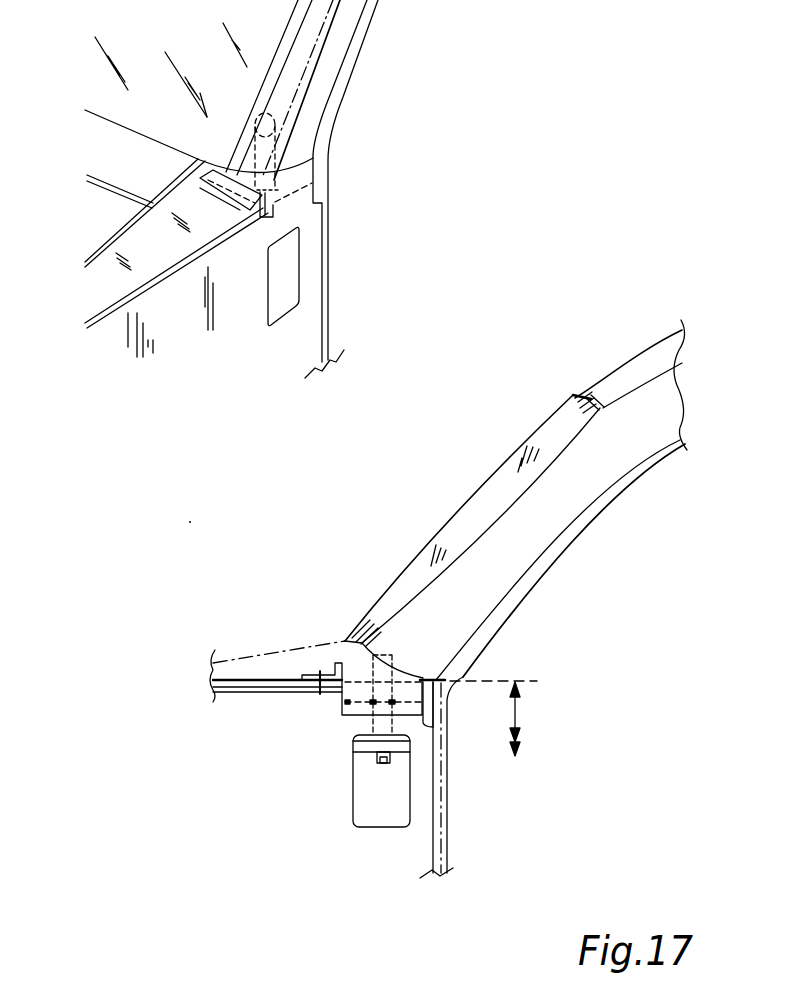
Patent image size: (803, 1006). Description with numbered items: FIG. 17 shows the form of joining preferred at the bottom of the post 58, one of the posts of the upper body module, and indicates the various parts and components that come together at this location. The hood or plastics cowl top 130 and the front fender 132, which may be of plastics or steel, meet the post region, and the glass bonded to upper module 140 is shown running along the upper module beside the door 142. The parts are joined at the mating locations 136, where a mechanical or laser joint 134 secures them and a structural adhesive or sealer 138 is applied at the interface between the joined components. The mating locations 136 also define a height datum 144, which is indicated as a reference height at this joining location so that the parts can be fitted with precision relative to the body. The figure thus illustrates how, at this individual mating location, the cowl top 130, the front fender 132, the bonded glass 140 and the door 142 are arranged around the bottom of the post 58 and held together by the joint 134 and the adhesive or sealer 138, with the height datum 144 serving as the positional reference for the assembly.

The rear post 58 is at (532, 543).
The hood or plastics cowl top 130 is at (113, 125).
The front fender 132 is at (130, 229).
The mechanical or laser joint 134 is at (357, 705).
The mating locations 136 is at (377, 752).
The structural adhesive or sealer 138 is at (453, 677).
The glass bonded to upper module 140 is at (510, 455).
The door 142 is at (360, 67).
The height datum 144 is at (517, 723).